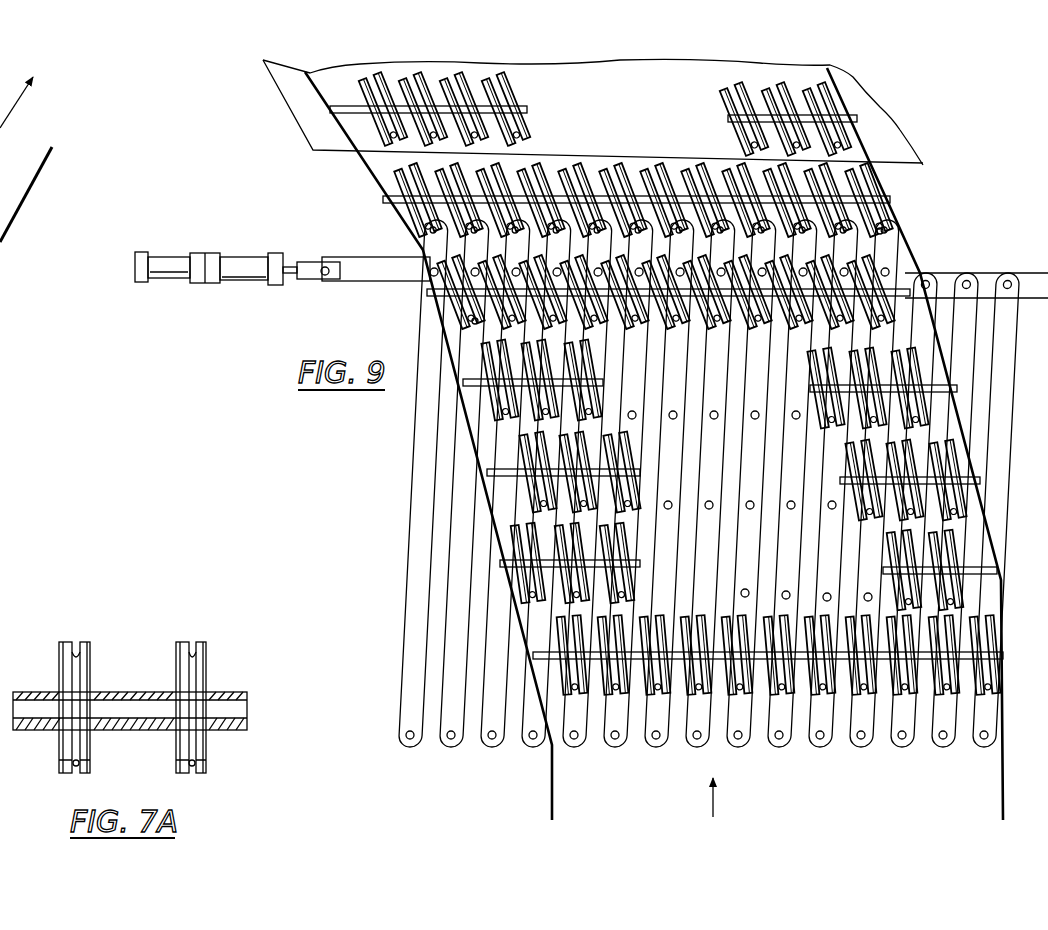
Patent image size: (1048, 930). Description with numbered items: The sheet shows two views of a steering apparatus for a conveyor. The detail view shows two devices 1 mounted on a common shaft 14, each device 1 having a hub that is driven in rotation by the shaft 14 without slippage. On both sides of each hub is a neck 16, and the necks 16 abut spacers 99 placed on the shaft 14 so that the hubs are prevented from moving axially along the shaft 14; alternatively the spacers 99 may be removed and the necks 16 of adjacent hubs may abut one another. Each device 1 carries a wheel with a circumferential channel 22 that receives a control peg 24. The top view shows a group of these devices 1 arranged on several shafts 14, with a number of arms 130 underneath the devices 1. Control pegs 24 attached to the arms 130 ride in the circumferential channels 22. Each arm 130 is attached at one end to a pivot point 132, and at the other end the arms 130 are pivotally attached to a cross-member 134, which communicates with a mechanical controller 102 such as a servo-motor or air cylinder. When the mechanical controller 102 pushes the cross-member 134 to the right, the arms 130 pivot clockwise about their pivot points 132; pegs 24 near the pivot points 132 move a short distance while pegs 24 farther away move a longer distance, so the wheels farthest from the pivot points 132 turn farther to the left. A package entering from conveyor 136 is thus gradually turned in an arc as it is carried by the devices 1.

In FIG. 9, the device 1 is at (517, 450).
In FIG. 7A, the device 1 is at (90, 640).
In FIG. 9, the shaft 14 is at (393, 190).
In FIG. 7A, the shaft 14 is at (140, 733).
In FIG. 7A, the neck 16 is at (62, 690).
In FIG. 9, the circumferential channel 22 is at (443, 270).
In FIG. 9, the control peg 24 is at (475, 321).
In FIG. 7A, the control peg 24 is at (72, 768).
In FIG. 7A, the spacer 99 is at (157, 658).
In FIG. 9, the mechanical controller 102 is at (262, 218).
In FIG. 9, the arm 130 is at (410, 546).
In FIG. 9, the pivot point 132 is at (696, 752).
In FIG. 9, the cross-member 134 is at (368, 258).
In FIG. 9, the conveyor 136 is at (820, 800).